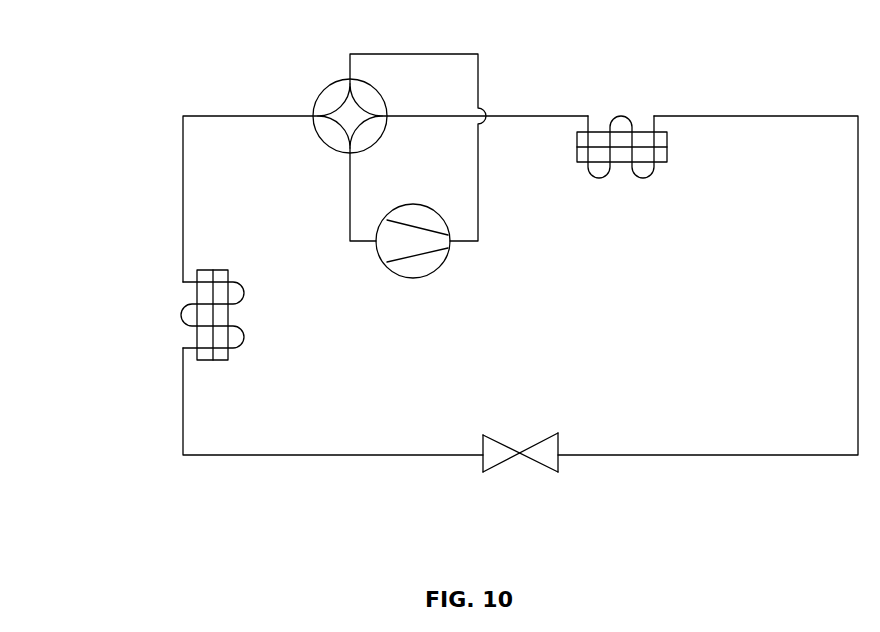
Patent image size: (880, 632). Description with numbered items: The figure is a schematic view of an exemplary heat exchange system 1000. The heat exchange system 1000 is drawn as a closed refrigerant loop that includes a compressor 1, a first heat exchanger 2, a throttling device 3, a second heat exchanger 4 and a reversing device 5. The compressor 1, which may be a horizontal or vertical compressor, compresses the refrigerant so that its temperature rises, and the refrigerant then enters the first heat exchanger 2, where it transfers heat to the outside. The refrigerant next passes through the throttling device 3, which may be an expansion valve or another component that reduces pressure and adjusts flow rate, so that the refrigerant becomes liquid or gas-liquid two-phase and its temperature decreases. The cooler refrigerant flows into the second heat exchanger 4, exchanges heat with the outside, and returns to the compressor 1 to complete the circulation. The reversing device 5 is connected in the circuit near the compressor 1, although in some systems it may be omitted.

The heat exchange system 1000 is at (153, 107).
The compressor 1 is at (448, 237).
The first heat exchanger 2 is at (638, 116).
The throttling device 3 is at (483, 470).
The second heat exchanger 4 is at (185, 313).
The reversing device 5 is at (337, 85).